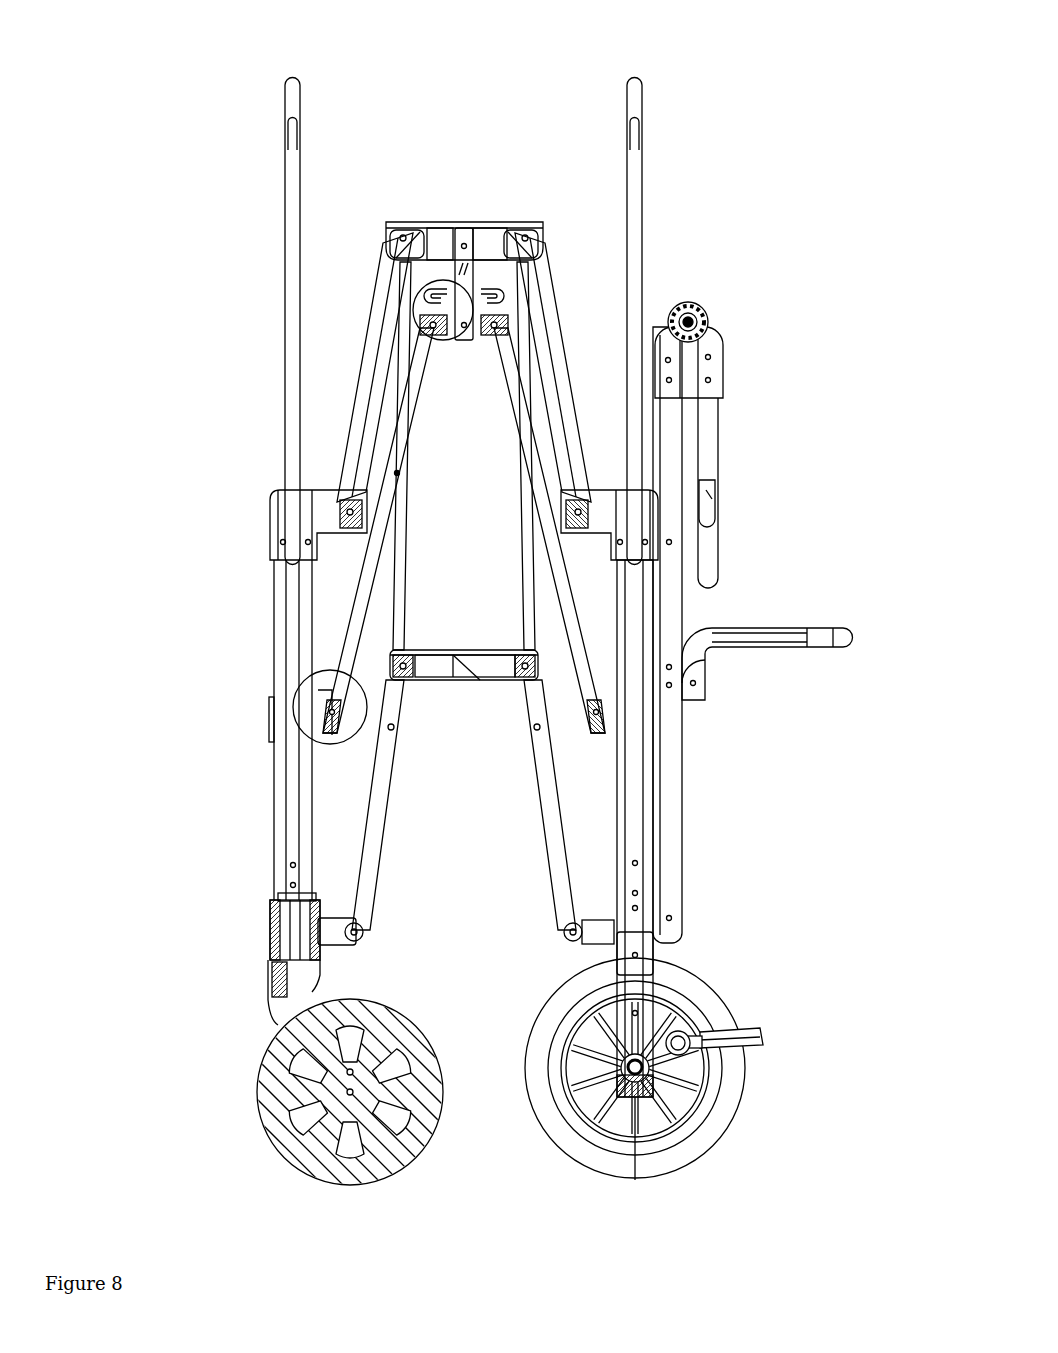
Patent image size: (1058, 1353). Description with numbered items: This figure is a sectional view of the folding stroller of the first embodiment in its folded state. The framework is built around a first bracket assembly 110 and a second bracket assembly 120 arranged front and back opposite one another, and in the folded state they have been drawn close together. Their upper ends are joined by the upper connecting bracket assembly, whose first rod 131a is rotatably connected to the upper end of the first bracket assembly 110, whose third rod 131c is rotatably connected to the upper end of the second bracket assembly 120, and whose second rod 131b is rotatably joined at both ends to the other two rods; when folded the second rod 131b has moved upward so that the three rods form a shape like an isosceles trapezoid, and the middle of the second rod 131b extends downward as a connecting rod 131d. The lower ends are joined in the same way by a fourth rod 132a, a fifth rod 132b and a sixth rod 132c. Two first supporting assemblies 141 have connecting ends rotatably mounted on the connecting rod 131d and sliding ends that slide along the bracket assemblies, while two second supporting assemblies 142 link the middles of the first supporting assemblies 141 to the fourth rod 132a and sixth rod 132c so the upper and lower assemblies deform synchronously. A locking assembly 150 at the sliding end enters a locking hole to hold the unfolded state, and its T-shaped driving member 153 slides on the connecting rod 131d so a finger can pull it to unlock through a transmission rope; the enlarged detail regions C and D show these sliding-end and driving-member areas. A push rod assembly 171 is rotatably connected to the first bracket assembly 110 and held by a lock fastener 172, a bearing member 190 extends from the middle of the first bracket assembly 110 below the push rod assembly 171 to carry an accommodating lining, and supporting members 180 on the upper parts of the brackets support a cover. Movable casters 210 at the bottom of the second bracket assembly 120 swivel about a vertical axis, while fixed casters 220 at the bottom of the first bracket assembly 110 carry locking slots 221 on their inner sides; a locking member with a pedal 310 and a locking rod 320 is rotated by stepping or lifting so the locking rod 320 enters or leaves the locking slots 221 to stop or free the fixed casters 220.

The first bracket assembly 110 is at (630, 795).
The second bracket assembly 120 is at (293, 817).
The first rod 131a is at (383, 290).
The second rod 131b is at (435, 232).
The third rod 131c is at (552, 338).
The connecting rod 131d is at (483, 247).
The fourth rod 132a is at (352, 908).
The fifth rod 132b is at (480, 680).
The sixth rod 132c is at (585, 925).
The first supporting assembly 141 is at (407, 447).
The second supporting assembly 142 is at (393, 583).
The locking assembly 150 is at (323, 732).
The driving member 153 is at (502, 283).
The push rod assembly 171 is at (712, 493).
The lock fastener 172 is at (713, 322).
The supporting member 180 is at (291, 314).
The bearing member 190 is at (782, 640).
The movable caster 210 is at (280, 1063).
The fixed caster 220 is at (712, 995).
The locking slot 221 is at (577, 1020).
The pedal 310 is at (762, 1040).
The locking rod 320 is at (715, 1050).
The detail region C is at (285, 700).
The detail region D is at (412, 323).